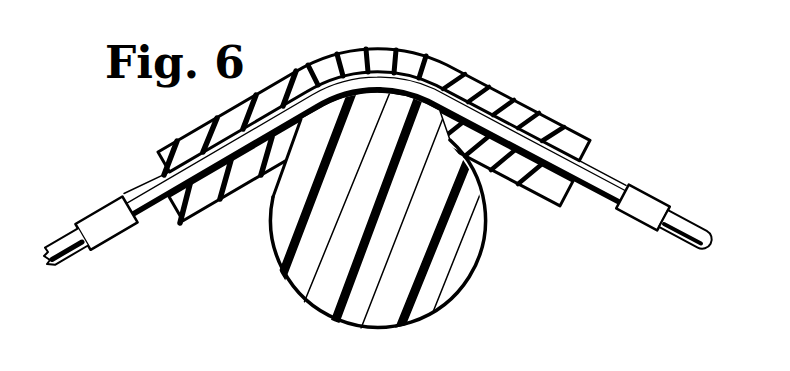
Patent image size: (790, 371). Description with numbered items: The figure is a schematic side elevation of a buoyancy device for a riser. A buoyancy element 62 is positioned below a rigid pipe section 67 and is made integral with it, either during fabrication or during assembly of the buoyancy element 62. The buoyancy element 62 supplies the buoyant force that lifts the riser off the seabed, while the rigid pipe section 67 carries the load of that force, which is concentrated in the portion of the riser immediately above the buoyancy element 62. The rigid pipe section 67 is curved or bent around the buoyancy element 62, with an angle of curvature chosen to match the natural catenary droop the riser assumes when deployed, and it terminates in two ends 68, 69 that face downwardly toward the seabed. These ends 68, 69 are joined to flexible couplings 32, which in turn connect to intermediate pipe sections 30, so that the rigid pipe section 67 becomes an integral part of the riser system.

The intermediate pipe section 30 is at (80, 260).
The flexible coupling 32 is at (106, 228).
The buoyancy element 62 is at (404, 216).
The rigid pipe section 67 is at (486, 128).
The end of rigid pipe section 68 is at (153, 191).
The end of rigid pipe section 69 is at (606, 190).